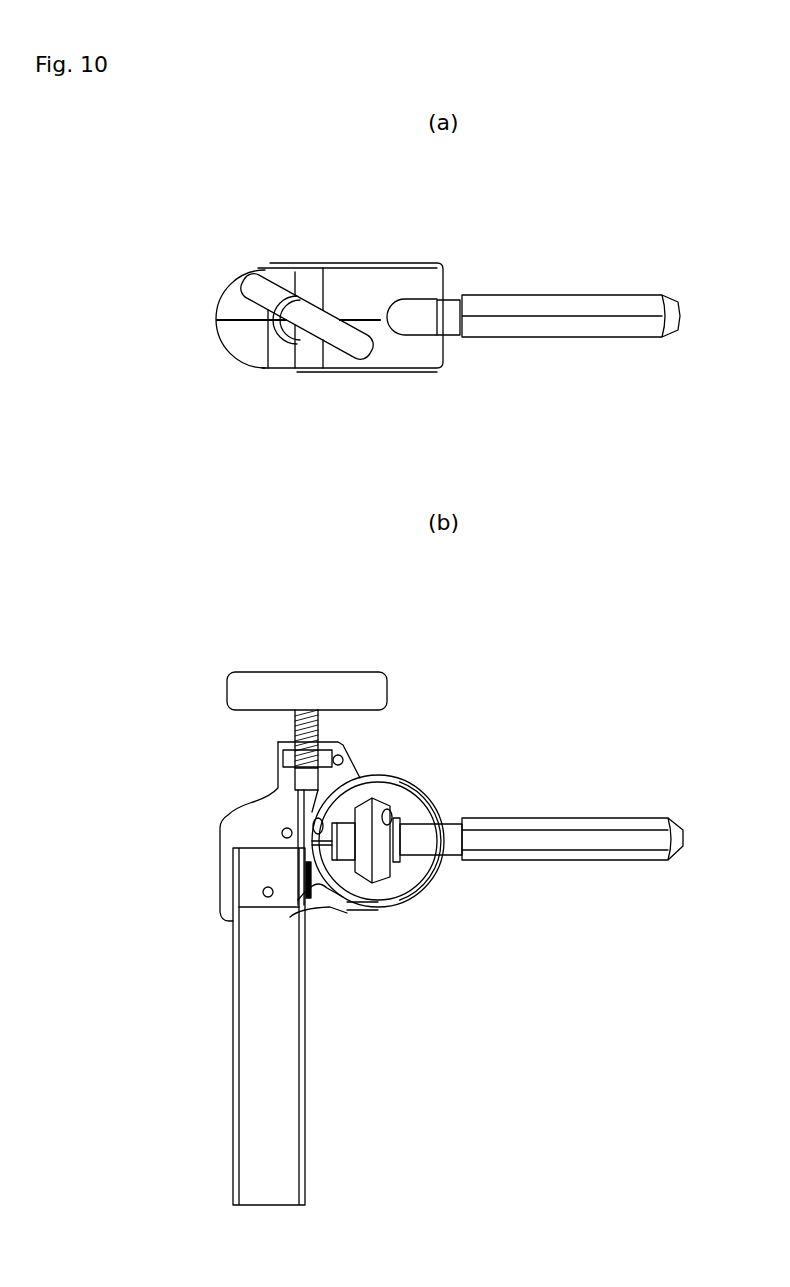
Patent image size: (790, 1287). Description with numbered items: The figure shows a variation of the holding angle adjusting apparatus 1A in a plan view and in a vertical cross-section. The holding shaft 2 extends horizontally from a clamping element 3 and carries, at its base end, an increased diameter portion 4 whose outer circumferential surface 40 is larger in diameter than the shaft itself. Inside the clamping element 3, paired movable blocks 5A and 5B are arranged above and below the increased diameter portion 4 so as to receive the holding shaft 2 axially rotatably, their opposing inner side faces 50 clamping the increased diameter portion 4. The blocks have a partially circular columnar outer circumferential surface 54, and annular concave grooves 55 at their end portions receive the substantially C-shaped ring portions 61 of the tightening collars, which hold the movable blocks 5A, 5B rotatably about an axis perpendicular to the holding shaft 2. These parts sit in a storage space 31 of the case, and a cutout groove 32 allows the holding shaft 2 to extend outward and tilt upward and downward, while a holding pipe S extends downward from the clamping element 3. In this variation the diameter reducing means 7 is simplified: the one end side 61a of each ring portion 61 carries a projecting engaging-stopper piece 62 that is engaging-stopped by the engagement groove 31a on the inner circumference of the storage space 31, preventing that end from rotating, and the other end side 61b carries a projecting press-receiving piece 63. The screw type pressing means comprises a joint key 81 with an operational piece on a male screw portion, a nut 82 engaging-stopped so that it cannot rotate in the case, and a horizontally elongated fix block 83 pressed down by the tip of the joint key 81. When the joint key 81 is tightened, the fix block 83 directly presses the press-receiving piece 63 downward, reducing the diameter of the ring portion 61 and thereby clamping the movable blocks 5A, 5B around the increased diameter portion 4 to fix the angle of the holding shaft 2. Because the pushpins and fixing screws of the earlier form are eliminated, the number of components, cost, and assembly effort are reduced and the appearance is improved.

In FIG. 10A, the holding angle adjusting apparatus 1A is at (500, 216).
In FIG. 10B, the holding angle adjusting apparatus 1A is at (516, 695).
In FIG. 10A, the holding shaft 2 is at (595, 302).
In FIG. 10B, the holding shaft 2 is at (598, 822).
In FIG. 10A, the clamping element 3 is at (240, 283).
In FIG. 10B, the clamping element 3 is at (227, 818).
In FIG. 10B, the increased diameter portion 4 is at (416, 836).
In FIG. 10A, the movable block 5A is at (412, 323).
In FIG. 10B, the movable block 5A is at (406, 830).
In FIG. 10B, the movable block 5B is at (407, 880).
In FIG. 10B, the diameter reducing means 7 is at (248, 641).
In FIG. 10B, the storage space 31 is at (347, 905).
In FIG. 10B, the engagement groove 31a is at (303, 887).
In FIG. 10B, the cutout groove 32 is at (437, 875).
In FIG. 10B, the outer circumferential surface 40 is at (380, 802).
In FIG. 10B, the inner side face 50 is at (398, 822).
In FIG. 10B, the outer circumferential surface 54 is at (370, 903).
In FIG. 10B, the annular concave groove 55 is at (367, 782).
In FIG. 10B, the ring portion 61 is at (400, 827).
In FIG. 10B, the pin lower end 61a is at (327, 908).
In FIG. 10B, the other end side 61b is at (303, 840).
In FIG. 10B, the engaging-stopper piece 62 is at (305, 873).
In FIG. 10B, the press-receiving piece 63 is at (307, 798).
In FIG. 10A, the joint key 81 is at (247, 280).
In FIG. 10B, the joint key 81 is at (323, 680).
In FIG. 10B, the nut 82 is at (283, 757).
In FIG. 10B, the fix block 83 is at (303, 780).
In FIG. 10B, the holding pipe S is at (305, 1125).